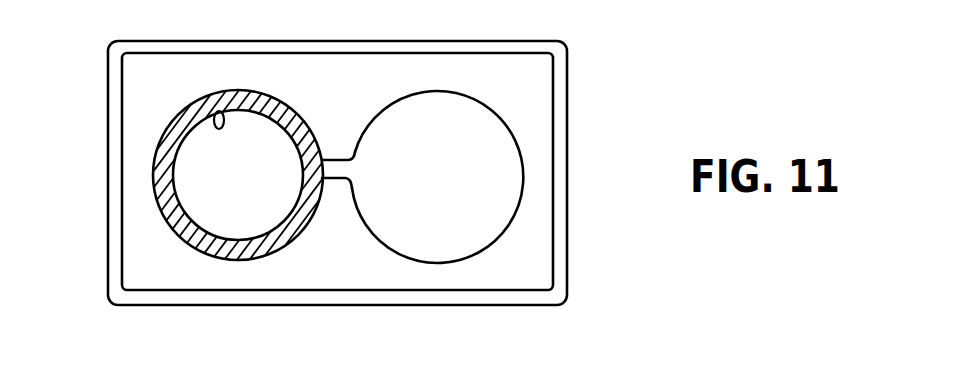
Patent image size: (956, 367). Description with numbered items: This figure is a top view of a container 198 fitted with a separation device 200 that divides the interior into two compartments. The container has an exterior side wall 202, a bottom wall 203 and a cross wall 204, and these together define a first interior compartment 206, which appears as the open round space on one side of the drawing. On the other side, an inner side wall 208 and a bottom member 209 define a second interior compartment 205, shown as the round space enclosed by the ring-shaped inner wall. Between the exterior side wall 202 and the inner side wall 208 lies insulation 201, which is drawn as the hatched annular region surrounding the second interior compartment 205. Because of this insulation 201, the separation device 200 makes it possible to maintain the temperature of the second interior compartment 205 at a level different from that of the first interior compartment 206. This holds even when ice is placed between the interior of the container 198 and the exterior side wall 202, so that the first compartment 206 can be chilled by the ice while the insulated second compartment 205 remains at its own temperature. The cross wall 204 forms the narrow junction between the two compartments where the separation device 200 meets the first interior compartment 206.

The container 198 is at (533, 40).
The separation device 200 is at (289, 98).
The insulation 201 is at (177, 225).
The exterior side wall 202 is at (157, 140).
The bottom wall 203 is at (487, 131).
The cross wall 204 is at (354, 159).
The second interior compartment 205 is at (240, 175).
The first interior compartment 206 is at (437, 177).
The inner side wall 208 is at (224, 111).
The bottom member 209 is at (187, 192).